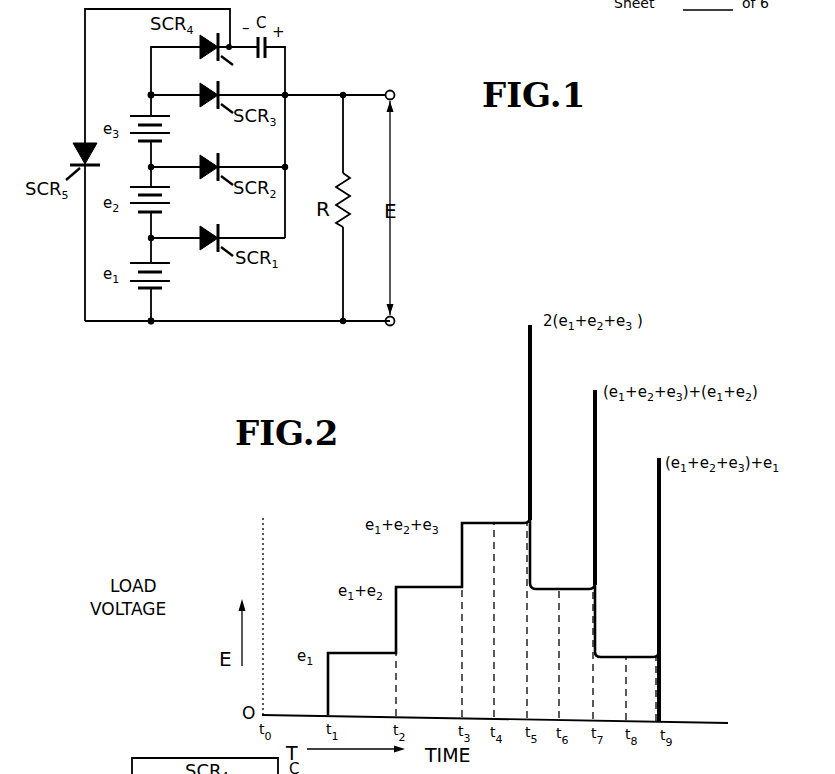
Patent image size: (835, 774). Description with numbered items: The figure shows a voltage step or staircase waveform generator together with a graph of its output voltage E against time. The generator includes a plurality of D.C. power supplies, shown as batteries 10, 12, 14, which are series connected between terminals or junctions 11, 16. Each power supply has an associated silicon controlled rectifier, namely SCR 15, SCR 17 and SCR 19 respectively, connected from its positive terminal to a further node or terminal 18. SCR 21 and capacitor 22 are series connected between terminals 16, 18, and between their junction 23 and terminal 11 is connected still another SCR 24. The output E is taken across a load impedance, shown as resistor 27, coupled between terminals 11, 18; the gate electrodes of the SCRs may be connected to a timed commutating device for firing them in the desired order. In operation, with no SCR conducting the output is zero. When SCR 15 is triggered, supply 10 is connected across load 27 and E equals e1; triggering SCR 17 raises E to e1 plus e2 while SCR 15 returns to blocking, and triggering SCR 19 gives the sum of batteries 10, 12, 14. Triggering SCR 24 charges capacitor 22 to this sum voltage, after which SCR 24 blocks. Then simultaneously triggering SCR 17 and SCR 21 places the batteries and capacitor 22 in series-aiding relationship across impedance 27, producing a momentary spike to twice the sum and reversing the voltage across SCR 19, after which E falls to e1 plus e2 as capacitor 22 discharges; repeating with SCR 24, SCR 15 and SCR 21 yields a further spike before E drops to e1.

The battery 10 is at (170, 273).
The terminal 11 is at (151, 323).
The battery 12 is at (168, 211).
The battery 14 is at (168, 143).
The silicon controlled rectifier 15 is at (206, 245).
The terminal 16 is at (151, 95).
The silicon controlled rectifier 17 is at (206, 174).
The terminal 18 is at (311, 95).
The silicon controlled rectifier 19 is at (206, 102).
The silicon controlled rectifier 21 is at (197, 50).
The capacitor 22 is at (267, 47).
The junction 23 is at (233, 65).
The silicon controlled rectifier 24 is at (80, 145).
The resistor 27 is at (338, 187).